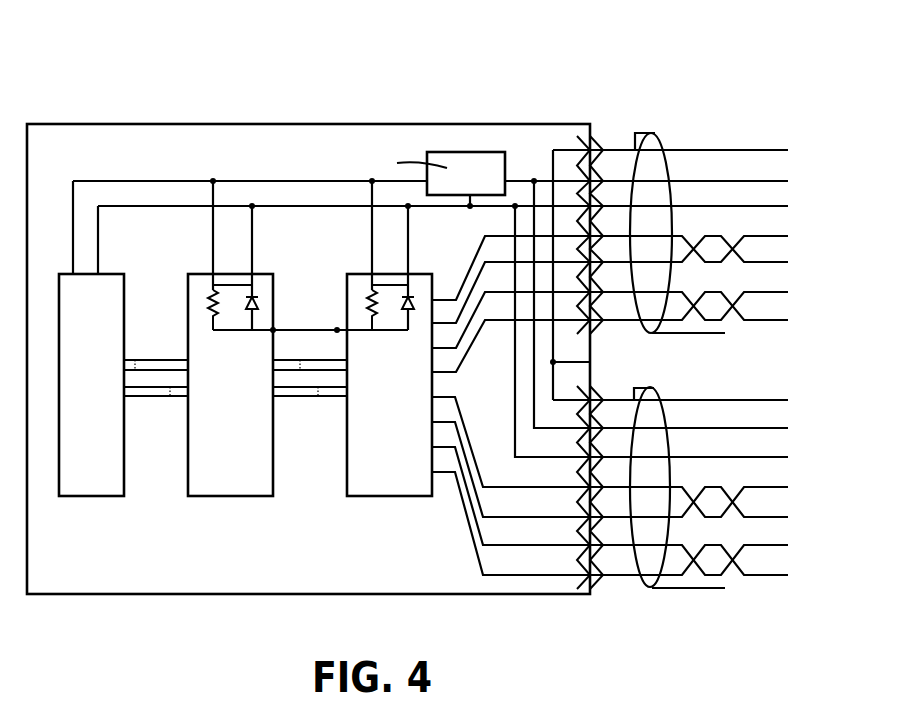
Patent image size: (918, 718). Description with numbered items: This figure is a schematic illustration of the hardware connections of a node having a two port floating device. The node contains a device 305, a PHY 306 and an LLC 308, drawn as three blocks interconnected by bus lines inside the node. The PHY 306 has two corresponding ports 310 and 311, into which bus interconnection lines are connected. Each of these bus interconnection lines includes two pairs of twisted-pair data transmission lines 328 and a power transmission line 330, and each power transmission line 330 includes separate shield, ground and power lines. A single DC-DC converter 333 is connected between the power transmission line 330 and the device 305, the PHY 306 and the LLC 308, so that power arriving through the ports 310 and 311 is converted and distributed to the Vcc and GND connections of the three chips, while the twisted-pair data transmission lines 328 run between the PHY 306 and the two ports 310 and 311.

The device 305 is at (97, 490).
The LLC 308 is at (240, 490).
The PHY 306 is at (397, 488).
The DC-DC converter 333 is at (487, 165).
The port 310 is at (655, 100).
The port 311 is at (650, 608).
The power transmission line 330 is at (822, 125).
The twisted-pair data transmission lines 328 is at (822, 230).